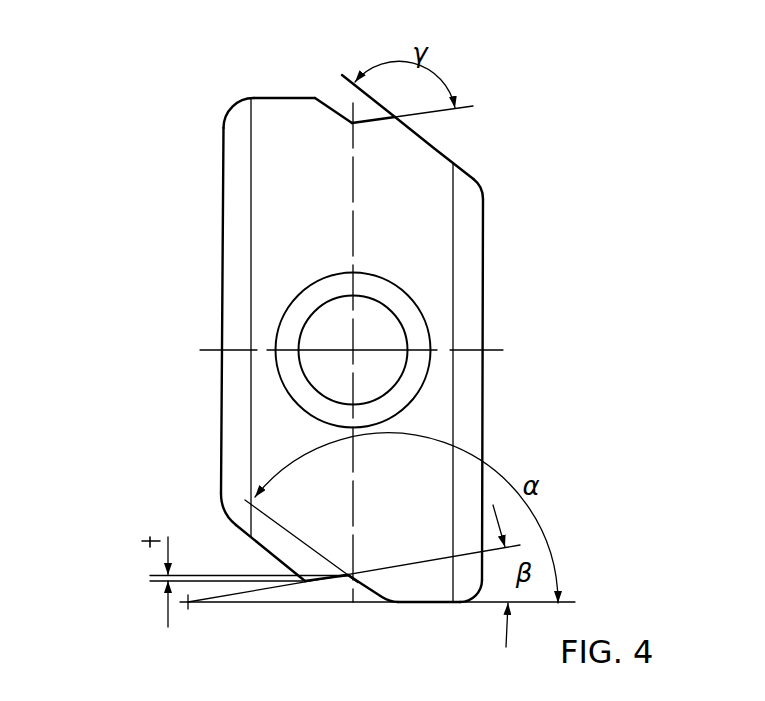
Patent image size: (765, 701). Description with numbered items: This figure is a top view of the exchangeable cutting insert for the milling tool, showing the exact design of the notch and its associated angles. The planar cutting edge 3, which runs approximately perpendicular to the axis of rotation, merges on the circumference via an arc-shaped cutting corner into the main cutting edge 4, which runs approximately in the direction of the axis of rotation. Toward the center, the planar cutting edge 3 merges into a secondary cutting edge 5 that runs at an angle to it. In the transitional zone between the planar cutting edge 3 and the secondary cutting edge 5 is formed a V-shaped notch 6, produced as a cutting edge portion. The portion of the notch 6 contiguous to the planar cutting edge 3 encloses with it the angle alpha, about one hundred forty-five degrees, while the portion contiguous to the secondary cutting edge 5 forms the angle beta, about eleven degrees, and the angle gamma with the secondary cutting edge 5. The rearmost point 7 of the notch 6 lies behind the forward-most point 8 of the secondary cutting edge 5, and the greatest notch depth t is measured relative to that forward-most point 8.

The planar cutting edge 3 is at (285, 98).
The main cutting edge 4 is at (220, 319).
The secondary cutting edge 5 is at (435, 149).
The V-shaped notch 6 is at (372, 120).
The rearmost point 7 is at (348, 575).
The forward-most point 8 is at (305, 581).